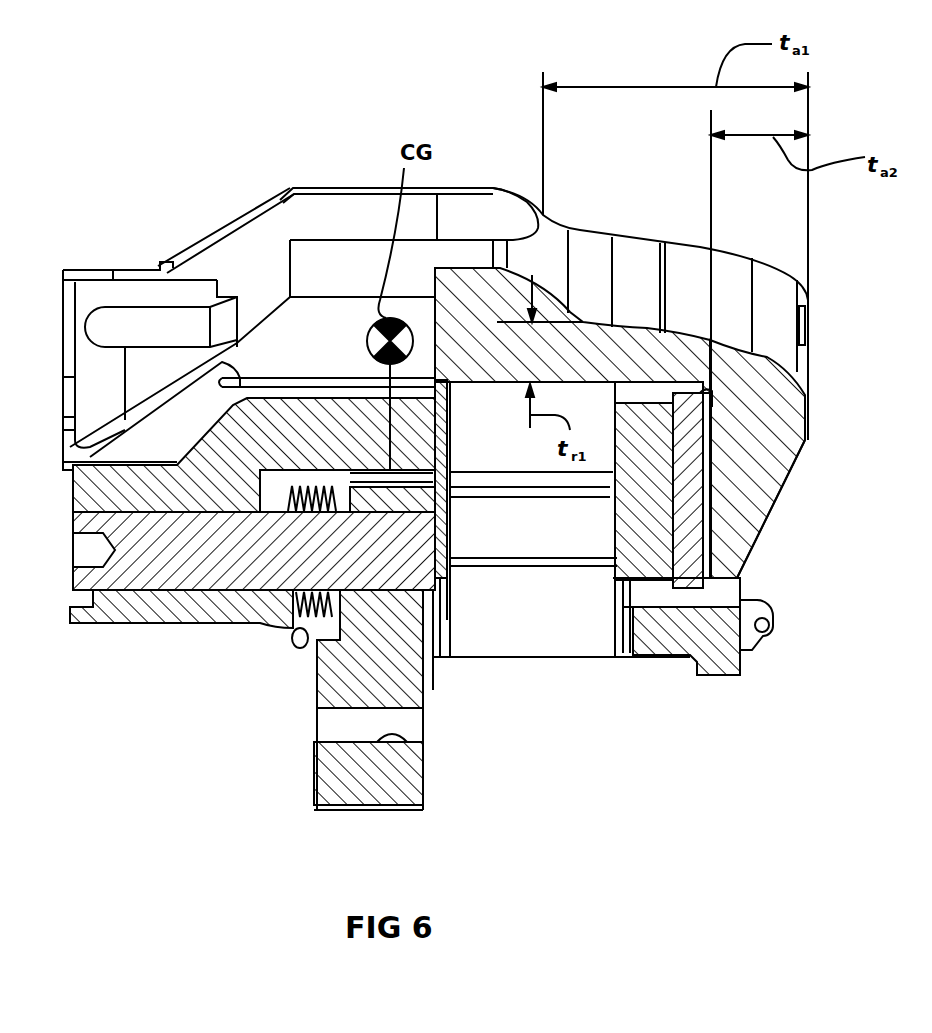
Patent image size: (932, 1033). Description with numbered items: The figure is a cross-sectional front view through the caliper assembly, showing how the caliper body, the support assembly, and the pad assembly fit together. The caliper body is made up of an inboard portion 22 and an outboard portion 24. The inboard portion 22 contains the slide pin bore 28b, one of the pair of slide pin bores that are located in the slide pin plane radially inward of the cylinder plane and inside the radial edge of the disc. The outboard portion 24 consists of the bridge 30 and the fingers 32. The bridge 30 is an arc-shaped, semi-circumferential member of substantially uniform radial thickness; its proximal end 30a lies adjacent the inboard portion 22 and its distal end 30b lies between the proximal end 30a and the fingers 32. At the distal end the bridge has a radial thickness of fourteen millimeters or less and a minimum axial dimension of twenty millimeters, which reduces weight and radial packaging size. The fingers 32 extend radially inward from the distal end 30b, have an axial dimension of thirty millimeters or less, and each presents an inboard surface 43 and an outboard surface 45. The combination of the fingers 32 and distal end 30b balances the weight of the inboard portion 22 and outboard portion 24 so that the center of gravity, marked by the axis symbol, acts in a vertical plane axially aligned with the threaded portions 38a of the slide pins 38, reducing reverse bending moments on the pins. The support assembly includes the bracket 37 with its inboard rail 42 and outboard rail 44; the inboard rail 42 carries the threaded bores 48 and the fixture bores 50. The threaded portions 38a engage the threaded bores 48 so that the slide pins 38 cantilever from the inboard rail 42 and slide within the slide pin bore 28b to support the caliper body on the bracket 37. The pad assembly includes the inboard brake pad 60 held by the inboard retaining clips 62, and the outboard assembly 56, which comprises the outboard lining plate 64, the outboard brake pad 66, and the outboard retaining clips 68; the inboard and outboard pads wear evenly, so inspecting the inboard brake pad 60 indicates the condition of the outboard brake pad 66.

The inboard portion 22 is at (203, 254).
The outboard portion 24 is at (617, 245).
The slide pin bore 28b is at (160, 582).
The bridge 30 is at (735, 247).
The proximal end 30a is at (304, 212).
The distal end 30b is at (645, 250).
The fingers 32 is at (775, 447).
The bracket 37 is at (718, 680).
The slide pins 38 is at (213, 567).
The threaded portions 38a is at (372, 565).
The inboard rail 42 is at (395, 795).
The inboard surface 43 is at (712, 407).
The outboard rail 44 is at (740, 670).
The outboard surface 45 is at (775, 503).
The threaded bores 48 is at (428, 660).
The fixture bores 50 is at (410, 742).
The outboard assembly 56 is at (612, 584).
The inboard brake pad 60 is at (450, 437).
The inboard retaining clips 62 is at (300, 645).
The outboard lining plate 64 is at (690, 538).
The outboard brake pad 66 is at (625, 528).
The outboard retaining clips 68 is at (768, 606).